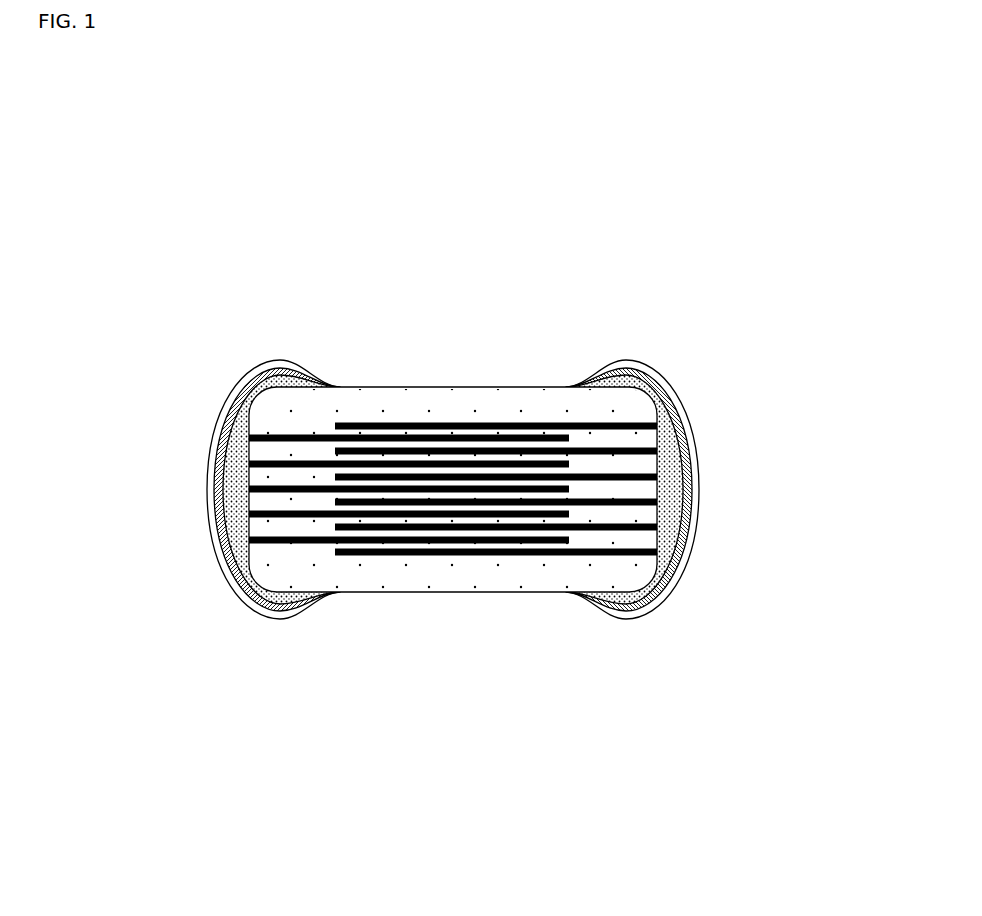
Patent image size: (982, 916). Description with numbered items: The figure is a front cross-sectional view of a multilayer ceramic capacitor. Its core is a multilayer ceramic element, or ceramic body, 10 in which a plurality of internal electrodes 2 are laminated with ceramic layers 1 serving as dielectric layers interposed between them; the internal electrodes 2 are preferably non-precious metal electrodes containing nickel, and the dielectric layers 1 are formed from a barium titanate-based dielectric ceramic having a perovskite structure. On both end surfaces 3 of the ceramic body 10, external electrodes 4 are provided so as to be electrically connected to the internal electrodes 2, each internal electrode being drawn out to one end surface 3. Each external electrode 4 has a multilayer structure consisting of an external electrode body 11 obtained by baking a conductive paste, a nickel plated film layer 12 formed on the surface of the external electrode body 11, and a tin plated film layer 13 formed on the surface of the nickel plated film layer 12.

The ceramic layer 1 is at (522, 460).
The internal electrode 2 is at (272, 462).
The end surface 3 is at (430, 488).
The external electrode 4 is at (439, 440).
The multilayer ceramic element 10 is at (453, 512).
The external electrode body 11 is at (214, 490).
The Ni plated film layer 12 is at (214, 452).
The Sn plated film layer 13 is at (229, 407).